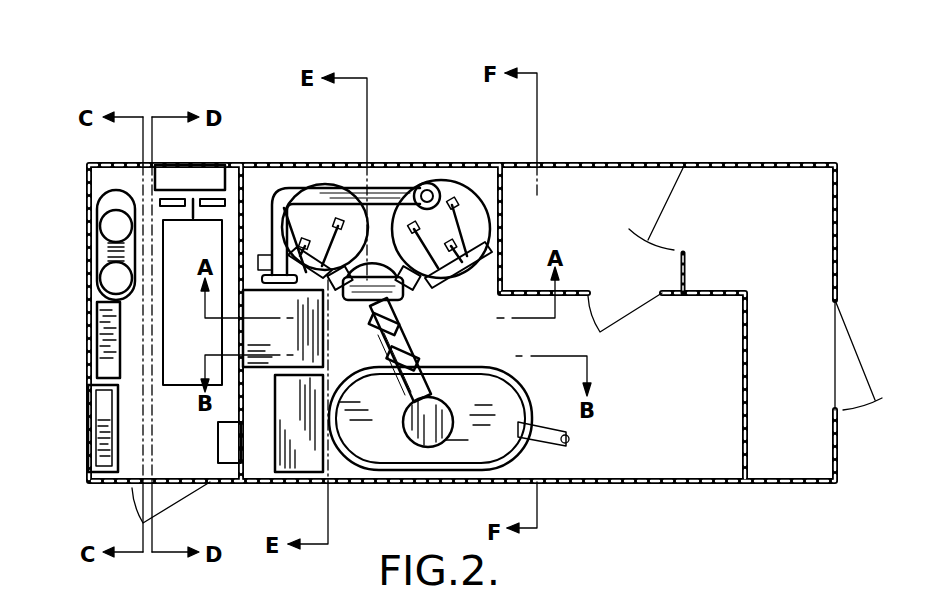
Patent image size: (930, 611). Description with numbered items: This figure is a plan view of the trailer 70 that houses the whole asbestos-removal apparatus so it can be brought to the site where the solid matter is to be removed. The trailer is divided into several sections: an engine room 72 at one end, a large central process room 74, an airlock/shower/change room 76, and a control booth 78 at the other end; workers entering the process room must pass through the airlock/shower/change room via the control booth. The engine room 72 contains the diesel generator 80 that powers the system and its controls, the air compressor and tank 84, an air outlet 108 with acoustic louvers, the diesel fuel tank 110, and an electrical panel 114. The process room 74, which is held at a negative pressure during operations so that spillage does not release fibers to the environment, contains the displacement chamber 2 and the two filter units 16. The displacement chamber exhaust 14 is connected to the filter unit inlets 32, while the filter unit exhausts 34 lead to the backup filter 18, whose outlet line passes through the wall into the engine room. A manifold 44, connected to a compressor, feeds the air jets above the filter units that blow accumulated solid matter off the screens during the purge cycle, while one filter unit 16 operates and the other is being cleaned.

The displacement chamber 2 is at (428, 462).
The displacement chamber exhaust 14 is at (380, 326).
The filter unit 16 is at (452, 180).
The backup filter 18 is at (295, 349).
The filter unit inlet 32 is at (400, 316).
The filter unit exhaust 34 is at (340, 185).
The manifold 44 is at (442, 284).
The trailer 70 is at (586, 483).
The engine room 72 is at (154, 374).
The process room 74 is at (510, 354).
The airlock/shower/change room 76 is at (590, 239).
The control booth 78 is at (798, 354).
The diesel generator 80 is at (175, 283).
The air compressor and tank 84 is at (97, 257).
The air outlet 108 is at (192, 176).
The diesel fuel tank 110 is at (103, 352).
The electrical panel 114 is at (100, 415).